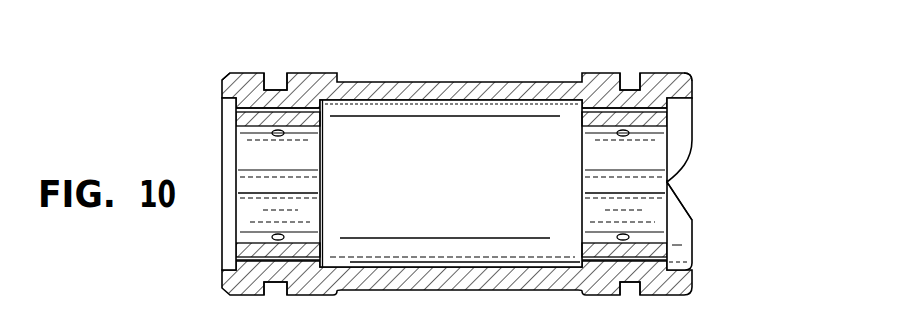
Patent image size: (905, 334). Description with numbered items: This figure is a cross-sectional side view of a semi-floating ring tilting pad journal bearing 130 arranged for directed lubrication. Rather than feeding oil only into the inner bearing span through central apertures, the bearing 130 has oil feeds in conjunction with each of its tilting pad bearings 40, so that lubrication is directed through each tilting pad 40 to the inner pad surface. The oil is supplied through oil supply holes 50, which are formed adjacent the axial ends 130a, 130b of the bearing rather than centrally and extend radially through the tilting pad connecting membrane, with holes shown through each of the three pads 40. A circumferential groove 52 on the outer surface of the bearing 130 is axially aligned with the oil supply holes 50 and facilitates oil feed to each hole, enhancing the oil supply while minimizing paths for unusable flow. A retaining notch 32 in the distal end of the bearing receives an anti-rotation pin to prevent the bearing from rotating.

The semi-floating ring tilting pad journal bearing 130 is at (457, 96).
The axial end 130a is at (232, 72).
The axial end 130b is at (694, 76).
The circumferential groove 52 is at (278, 89).
The oil supply holes 50 is at (274, 136).
The tilting pad bearings 40 is at (234, 109).
The retaining notch 32 is at (676, 195).